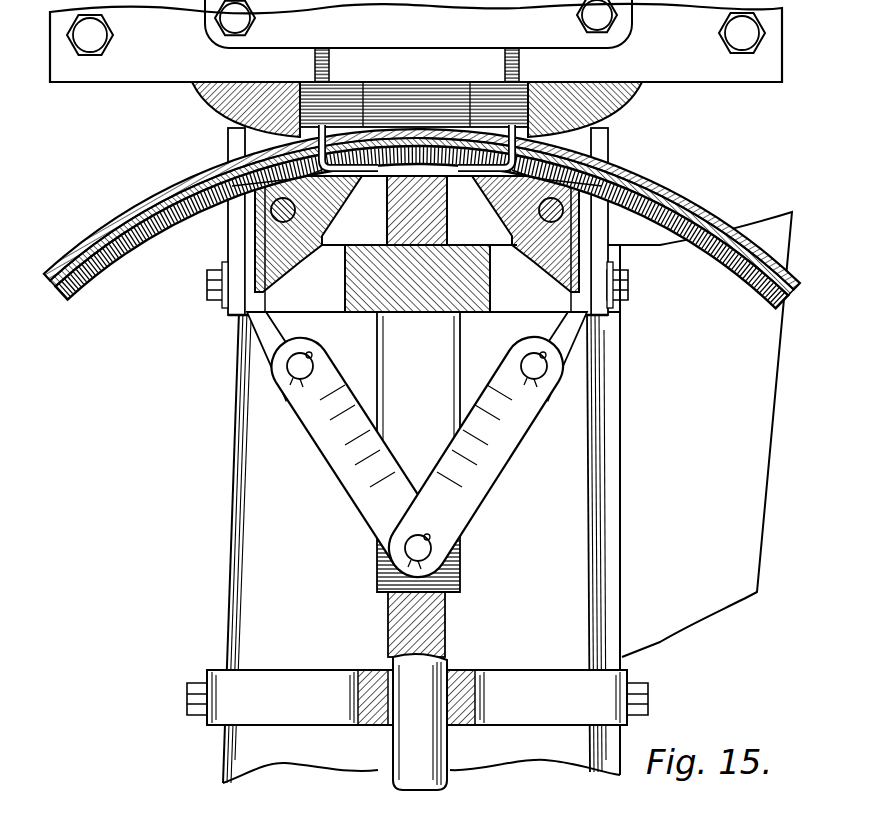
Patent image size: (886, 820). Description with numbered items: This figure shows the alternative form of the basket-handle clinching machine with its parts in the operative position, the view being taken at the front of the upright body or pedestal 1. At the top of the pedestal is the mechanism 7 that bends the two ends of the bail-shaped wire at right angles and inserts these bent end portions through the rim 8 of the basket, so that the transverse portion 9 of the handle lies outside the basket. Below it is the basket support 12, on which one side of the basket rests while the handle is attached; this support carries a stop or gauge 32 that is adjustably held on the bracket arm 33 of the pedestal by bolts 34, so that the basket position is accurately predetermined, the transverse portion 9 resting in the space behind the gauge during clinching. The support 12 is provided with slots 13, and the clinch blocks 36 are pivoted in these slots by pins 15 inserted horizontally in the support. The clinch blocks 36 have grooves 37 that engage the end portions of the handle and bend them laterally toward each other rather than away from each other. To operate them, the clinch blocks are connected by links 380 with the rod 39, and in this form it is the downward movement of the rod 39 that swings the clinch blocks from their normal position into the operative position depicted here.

The upright body or pedestal 1 is at (277, 473).
The mechanism for bending and inserting bail ends 7 is at (425, 62).
The rim of the basket 8 is at (66, 297).
The transverse portion of the handle 9 is at (478, 808).
The basket support 12 is at (410, 222).
The slots 13 is at (463, 207).
The pins 15 is at (197, 178).
The stop or gauge 32 is at (233, 133).
The bracket arm 33 is at (438, 293).
The bolts 34 is at (207, 288).
The clinch blocks 36 is at (288, 332).
The grooves 37 is at (245, 157).
The rod 39 is at (407, 670).
The links 380 is at (373, 490).